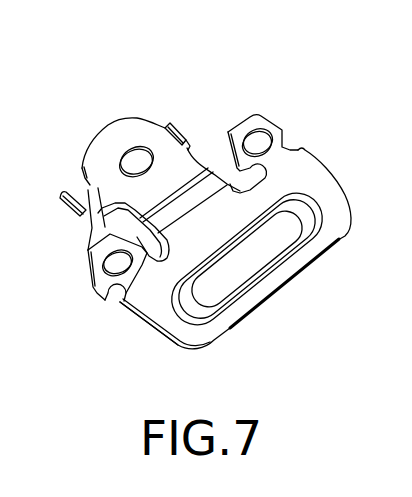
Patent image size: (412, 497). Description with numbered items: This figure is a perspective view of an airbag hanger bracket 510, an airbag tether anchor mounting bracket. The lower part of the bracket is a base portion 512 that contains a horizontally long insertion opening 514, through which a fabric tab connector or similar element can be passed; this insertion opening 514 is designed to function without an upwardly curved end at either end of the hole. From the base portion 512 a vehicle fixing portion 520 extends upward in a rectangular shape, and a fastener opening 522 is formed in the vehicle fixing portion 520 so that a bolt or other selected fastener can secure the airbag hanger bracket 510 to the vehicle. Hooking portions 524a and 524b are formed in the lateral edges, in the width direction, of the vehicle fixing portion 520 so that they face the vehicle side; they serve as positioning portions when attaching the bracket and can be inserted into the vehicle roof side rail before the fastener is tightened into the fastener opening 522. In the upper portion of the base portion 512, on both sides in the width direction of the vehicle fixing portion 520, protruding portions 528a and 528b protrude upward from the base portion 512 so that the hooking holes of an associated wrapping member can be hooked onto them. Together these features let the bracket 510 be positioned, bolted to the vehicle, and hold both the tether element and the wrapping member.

The airbag hanger bracket 510 is at (328, 141).
The base portion 512 is at (159, 322).
The insertion opening 514 is at (250, 257).
The vehicle fixing portion 520 is at (183, 170).
The fastener opening 522 is at (128, 149).
The hooking portion 524a is at (86, 220).
The hooking portion 524b is at (179, 133).
The protruding portion 528a is at (97, 288).
The protruding portion 528b is at (263, 128).